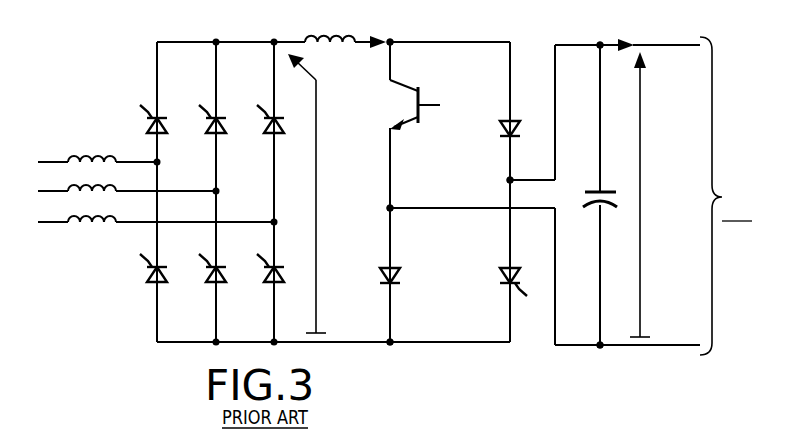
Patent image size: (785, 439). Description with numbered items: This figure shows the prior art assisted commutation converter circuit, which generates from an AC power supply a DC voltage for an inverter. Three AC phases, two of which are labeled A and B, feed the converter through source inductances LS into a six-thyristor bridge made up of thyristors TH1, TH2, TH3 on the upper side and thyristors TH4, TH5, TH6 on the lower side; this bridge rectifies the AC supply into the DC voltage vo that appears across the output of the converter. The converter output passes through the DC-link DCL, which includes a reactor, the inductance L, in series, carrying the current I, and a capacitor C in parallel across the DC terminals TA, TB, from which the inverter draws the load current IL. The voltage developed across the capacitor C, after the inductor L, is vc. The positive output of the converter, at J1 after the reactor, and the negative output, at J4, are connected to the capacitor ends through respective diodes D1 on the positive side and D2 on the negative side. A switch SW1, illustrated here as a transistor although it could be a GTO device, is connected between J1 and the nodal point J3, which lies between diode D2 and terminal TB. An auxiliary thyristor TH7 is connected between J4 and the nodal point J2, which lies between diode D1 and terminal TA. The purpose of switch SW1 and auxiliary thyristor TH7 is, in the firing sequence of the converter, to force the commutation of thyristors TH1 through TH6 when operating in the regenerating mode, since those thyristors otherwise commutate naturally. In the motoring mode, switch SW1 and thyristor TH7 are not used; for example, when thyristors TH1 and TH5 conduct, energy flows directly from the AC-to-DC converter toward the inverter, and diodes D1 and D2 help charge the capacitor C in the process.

The thyristor TH1 is at (172, 115).
The thyristor TH2 is at (231, 115).
The thyristor TH3 is at (289, 115).
The thyristor TH4 is at (165, 280).
The thyristor TH5 is at (224, 280).
The thyristor TH6 is at (283, 280).
The auxiliary thyristor TH7 is at (506, 295).
The diode D1 is at (503, 126).
The diode D2 is at (382, 280).
The switch SW1 is at (410, 93).
The inductance L is at (330, 56).
The capacitor C is at (587, 196).
The positive output J1 is at (391, 40).
The nodal point J2 is at (508, 179).
The nodal point J3 is at (388, 209).
The negative output J4 is at (390, 345).
The DC terminal TA is at (596, 44).
The DC terminal TB is at (598, 348).
The source inductance LS is at (147, 239).
The phase A input A is at (88, 162).
The phase B input B is at (118, 191).
The inductor current I is at (372, 56).
The load current IL is at (621, 60).
The DC voltage vo is at (308, 193).
The capacitor voltage vc is at (640, 194).
The DC-link DCL is at (700, 208).